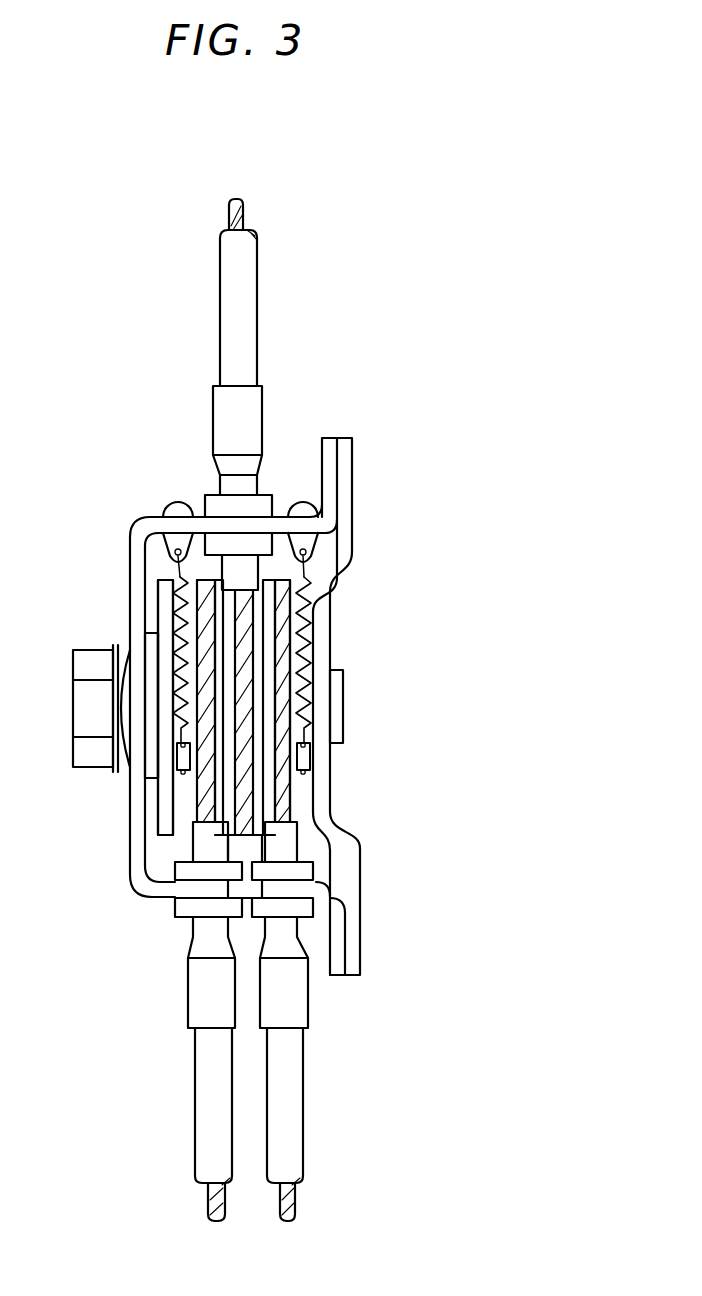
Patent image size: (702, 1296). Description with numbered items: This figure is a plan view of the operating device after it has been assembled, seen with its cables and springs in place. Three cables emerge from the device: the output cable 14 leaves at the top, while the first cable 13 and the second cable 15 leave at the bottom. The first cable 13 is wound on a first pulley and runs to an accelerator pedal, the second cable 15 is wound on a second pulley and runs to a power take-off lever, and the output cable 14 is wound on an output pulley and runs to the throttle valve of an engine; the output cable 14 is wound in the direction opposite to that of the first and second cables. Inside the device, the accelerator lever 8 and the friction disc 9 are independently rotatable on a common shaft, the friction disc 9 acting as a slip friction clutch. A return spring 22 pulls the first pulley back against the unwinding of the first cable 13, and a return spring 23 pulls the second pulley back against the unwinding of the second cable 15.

The accelerator lever 8 is at (172, 822).
The friction disc 9 is at (153, 758).
The first cable 13 is at (292, 1195).
The output cable 14 is at (238, 216).
The second cable 15 is at (213, 1196).
The return spring 22 is at (305, 578).
The return spring 23 is at (178, 578).